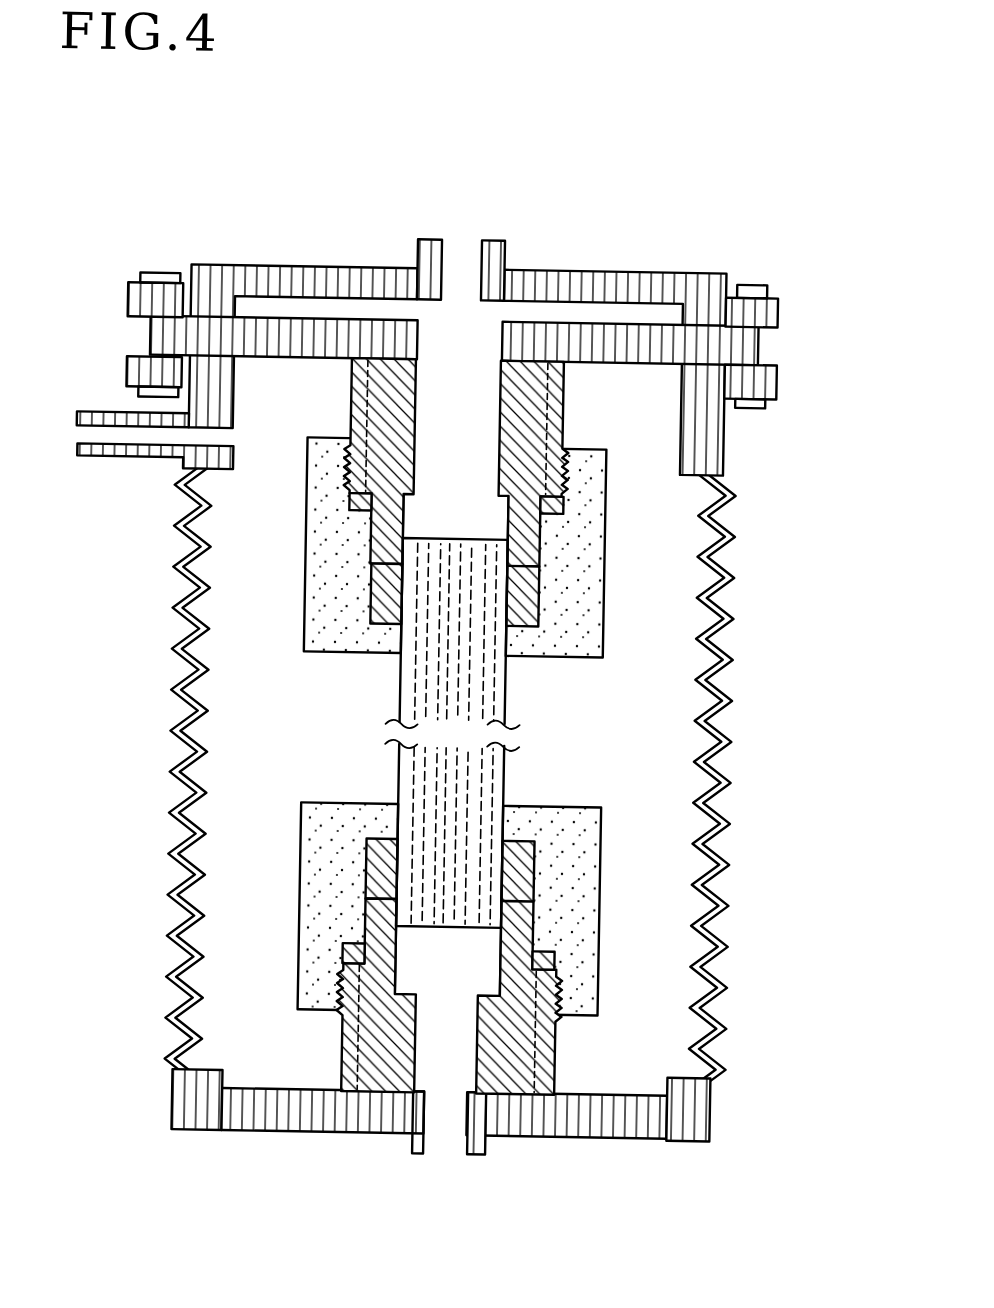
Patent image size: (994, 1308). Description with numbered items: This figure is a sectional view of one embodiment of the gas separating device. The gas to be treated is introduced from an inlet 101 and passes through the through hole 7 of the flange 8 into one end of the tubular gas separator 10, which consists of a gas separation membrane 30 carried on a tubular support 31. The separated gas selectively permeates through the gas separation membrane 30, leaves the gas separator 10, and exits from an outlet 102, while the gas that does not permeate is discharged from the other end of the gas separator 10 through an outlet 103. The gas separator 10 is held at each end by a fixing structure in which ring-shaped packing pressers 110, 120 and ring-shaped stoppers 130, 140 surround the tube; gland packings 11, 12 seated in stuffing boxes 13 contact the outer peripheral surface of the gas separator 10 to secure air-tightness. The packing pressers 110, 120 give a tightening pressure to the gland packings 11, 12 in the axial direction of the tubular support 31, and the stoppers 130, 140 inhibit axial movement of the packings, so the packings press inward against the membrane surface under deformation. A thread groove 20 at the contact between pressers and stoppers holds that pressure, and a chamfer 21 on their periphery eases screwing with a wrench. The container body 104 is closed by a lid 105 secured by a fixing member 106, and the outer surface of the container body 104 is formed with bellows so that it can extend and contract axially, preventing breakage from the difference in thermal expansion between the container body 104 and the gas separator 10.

The through hole 7 is at (434, 367).
The flange 8 is at (587, 331).
The gas separator 10 is at (375, 684).
The gland packing 11 is at (543, 859).
The gland packing 12 is at (545, 600).
The stuffing box 13 is at (537, 566).
The thread groove 20 is at (586, 461).
The chamfer 21 is at (542, 425).
The gas separation membrane 30 is at (508, 773).
The tubular support 31 is at (494, 766).
The inlet 101 is at (447, 251).
The outlet 102 is at (103, 441).
The outlet 103 is at (455, 1139).
The container body 104 is at (753, 382).
The lid 105 is at (758, 307).
The fixing member 106 is at (742, 281).
The ring-shaped packing presser 110 is at (348, 392).
The ring-shaped packing presser 120 is at (359, 1062).
The ring-shaped stopper 130 is at (314, 826).
The ring-shaped stopper 140 is at (324, 550).